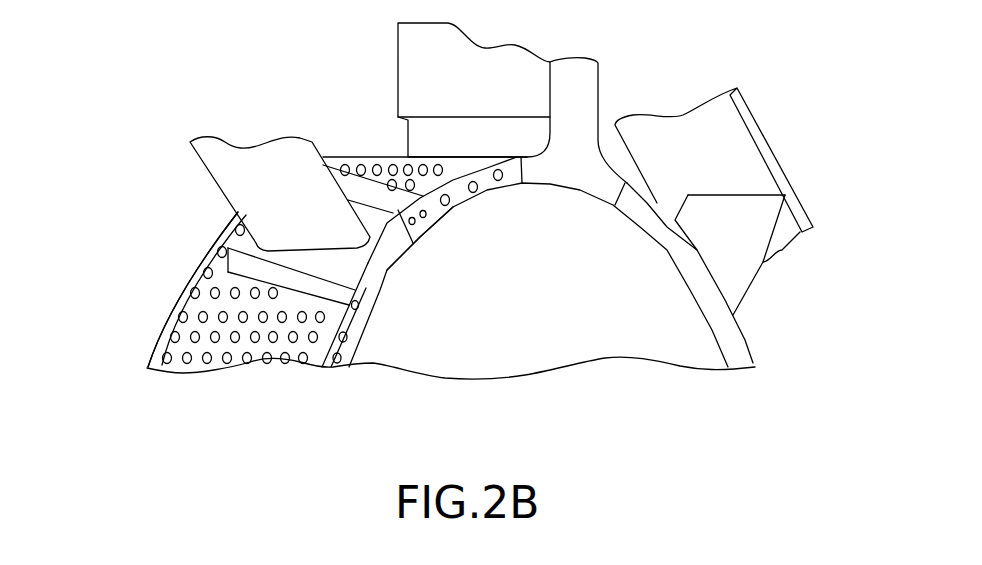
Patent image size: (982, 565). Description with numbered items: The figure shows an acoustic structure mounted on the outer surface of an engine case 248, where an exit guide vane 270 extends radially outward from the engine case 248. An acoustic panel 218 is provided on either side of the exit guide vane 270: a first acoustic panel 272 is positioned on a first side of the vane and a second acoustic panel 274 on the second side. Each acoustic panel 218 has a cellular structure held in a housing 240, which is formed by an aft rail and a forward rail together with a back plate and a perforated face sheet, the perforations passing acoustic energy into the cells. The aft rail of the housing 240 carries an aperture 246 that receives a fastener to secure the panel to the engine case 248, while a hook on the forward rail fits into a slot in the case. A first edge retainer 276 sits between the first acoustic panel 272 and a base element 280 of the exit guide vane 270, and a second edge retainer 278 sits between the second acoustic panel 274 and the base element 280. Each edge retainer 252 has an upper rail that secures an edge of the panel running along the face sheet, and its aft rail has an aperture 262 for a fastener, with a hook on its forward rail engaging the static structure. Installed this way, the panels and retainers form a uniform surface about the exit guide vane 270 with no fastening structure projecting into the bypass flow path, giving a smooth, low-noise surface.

The acoustic panel 218 is at (368, 163).
The housing 240 is at (343, 350).
The aperture 246 is at (473, 187).
The engine case 248 is at (740, 357).
The edge retainer 252 is at (237, 252).
The aperture 262 is at (422, 213).
The exit guide vane 270 is at (213, 146).
The first acoustic panel 272 is at (183, 312).
The second acoustic panel 274 is at (393, 162).
The first edge retainer 276 is at (303, 282).
The second edge retainer 278 is at (383, 203).
The base element 280 is at (358, 263).